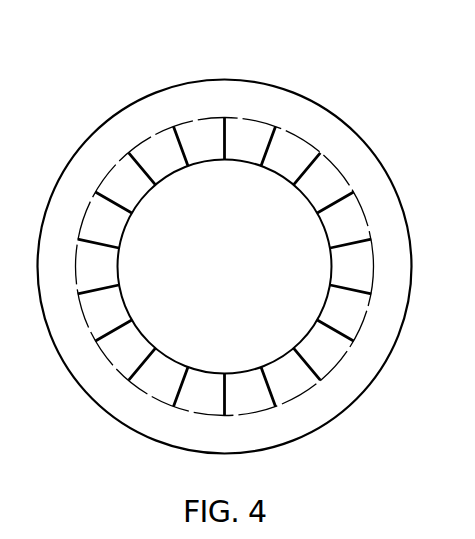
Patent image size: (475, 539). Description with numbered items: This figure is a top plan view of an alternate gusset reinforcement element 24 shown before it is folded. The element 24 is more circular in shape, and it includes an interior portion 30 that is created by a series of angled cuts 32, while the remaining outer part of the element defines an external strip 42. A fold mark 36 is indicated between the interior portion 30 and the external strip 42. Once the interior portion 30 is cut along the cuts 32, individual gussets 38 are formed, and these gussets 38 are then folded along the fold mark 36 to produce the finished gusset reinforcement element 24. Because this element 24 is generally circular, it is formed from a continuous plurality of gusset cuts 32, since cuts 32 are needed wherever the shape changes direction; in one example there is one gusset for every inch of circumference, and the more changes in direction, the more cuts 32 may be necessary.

The gusset reinforcement element 24 is at (233, 236).
The interior portion 30 is at (245, 137).
The cuts 32 is at (145, 163).
The fold mark 36 is at (342, 356).
The gussets 38 is at (355, 258).
The external strip 42 is at (62, 124).